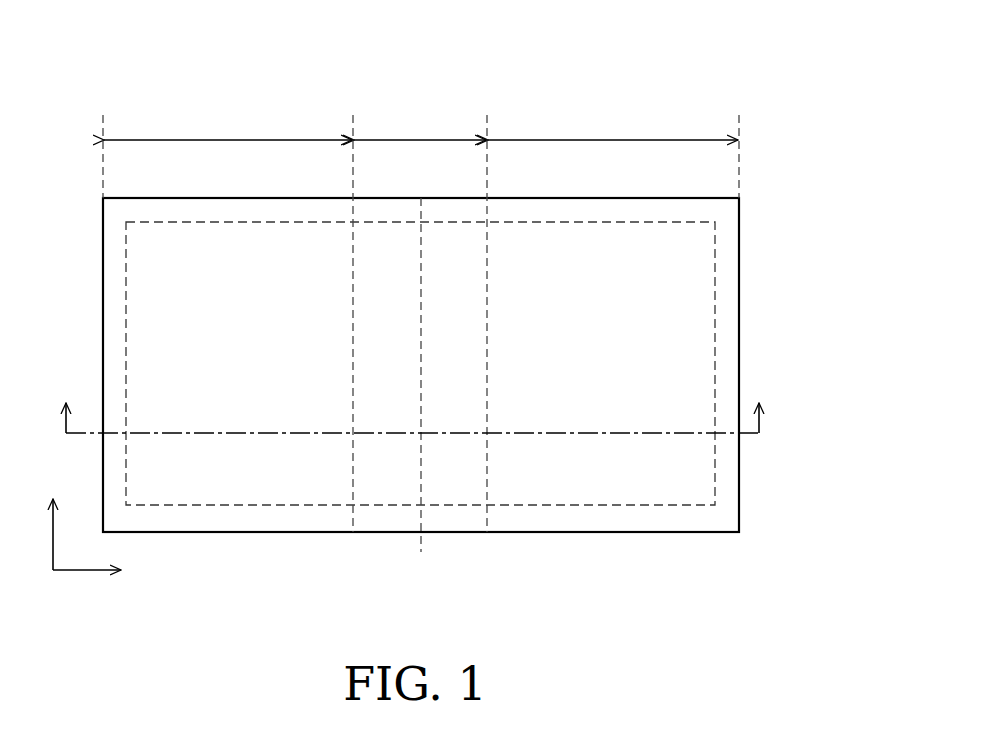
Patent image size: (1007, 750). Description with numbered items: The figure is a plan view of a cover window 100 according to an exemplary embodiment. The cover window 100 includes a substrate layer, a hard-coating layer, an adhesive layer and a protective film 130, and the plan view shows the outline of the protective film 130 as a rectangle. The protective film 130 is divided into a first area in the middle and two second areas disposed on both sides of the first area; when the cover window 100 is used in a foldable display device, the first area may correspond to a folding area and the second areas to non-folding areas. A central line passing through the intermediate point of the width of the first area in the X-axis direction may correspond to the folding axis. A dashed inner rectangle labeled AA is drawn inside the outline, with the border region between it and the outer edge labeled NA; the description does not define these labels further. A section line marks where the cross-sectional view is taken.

The cover window 100 is at (683, 60).
The protective film 130 is at (740, 258).
The non-display area NA is at (119, 277).
The active area AA is at (167, 321).